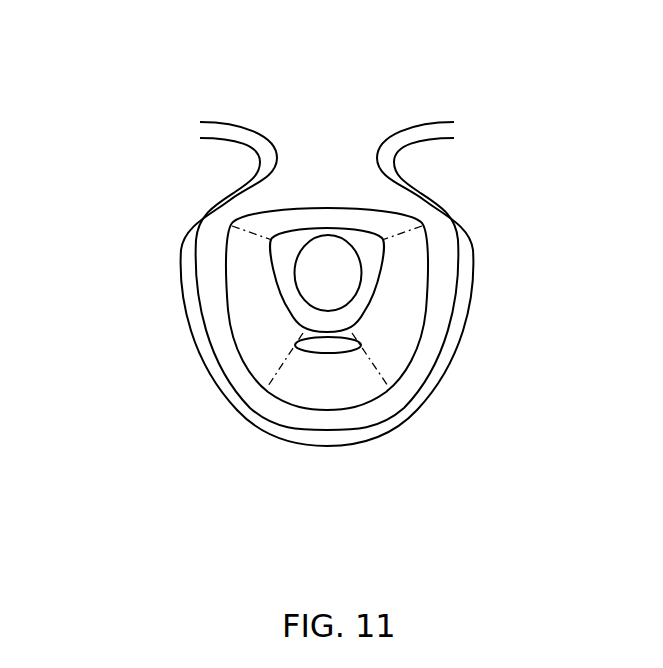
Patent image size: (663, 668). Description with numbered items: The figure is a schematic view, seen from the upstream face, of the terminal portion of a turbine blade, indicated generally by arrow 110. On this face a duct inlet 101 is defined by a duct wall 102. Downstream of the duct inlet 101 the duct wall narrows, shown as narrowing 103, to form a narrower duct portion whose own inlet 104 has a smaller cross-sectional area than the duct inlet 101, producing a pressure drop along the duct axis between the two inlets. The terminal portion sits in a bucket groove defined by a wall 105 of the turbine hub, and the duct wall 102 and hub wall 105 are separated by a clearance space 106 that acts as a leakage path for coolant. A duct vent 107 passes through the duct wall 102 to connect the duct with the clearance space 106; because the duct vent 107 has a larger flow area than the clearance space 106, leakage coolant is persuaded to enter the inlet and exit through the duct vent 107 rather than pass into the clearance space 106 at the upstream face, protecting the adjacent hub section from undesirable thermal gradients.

The implantable device 110 is at (110, 93).
The duct inlet 101 is at (418, 243).
The duct wall 102 is at (438, 305).
The duct wall narrowing 103 is at (282, 262).
The inlet of narrower duct portion 104 is at (333, 257).
The wall of turbine hub 105 is at (438, 392).
The clearance space 106 is at (280, 430).
The duct vent 107 is at (335, 357).